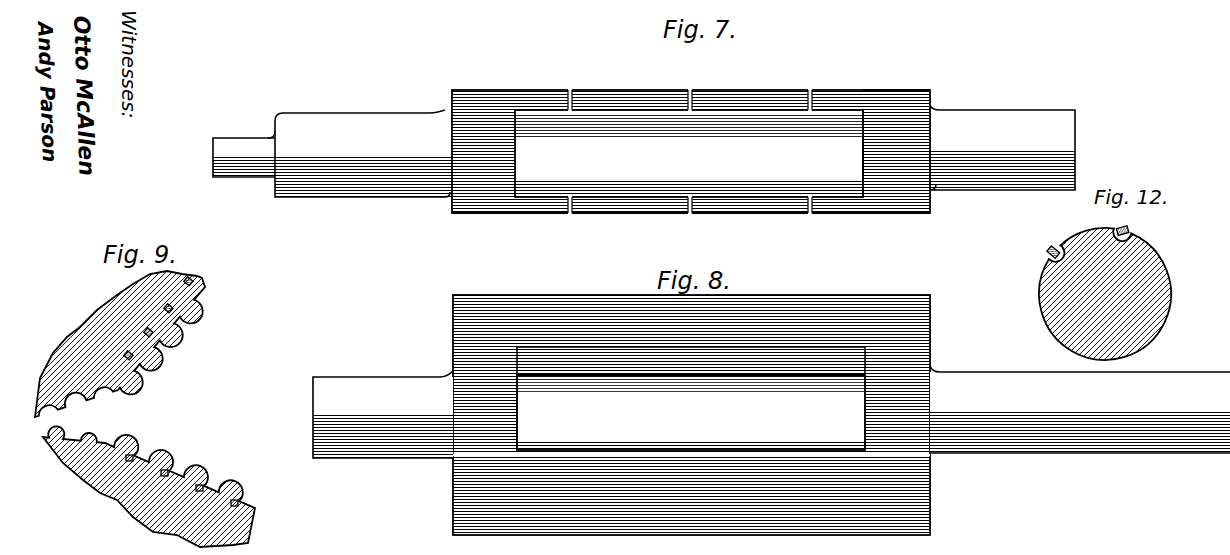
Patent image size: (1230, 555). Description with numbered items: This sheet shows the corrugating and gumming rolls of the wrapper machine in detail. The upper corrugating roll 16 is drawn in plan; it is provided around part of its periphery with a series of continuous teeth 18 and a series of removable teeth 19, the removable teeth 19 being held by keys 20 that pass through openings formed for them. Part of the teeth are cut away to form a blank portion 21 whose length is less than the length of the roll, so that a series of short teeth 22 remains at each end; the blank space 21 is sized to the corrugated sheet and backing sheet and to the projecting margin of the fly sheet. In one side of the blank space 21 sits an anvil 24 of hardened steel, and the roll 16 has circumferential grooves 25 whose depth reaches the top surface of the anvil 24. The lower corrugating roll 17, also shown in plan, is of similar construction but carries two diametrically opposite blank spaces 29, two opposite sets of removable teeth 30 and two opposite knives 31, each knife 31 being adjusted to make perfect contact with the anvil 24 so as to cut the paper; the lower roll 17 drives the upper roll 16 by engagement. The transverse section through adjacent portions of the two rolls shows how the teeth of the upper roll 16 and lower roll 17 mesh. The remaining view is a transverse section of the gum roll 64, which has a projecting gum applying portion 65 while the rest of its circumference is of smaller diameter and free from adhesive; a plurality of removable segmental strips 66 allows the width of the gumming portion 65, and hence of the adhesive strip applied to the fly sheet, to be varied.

In FIG. 7, the upper corrugating roll 16 is at (746, 90).
In FIG. 9, the upper corrugating roll 16 is at (90, 326).
In FIG. 8, the lower corrugating roll 17 is at (832, 300).
In FIG. 9, the lower corrugating roll 17 is at (230, 520).
In FIG. 7, the continuous teeth 18 is at (906, 91).
In FIG. 7, the removable teeth 19 is at (625, 200).
In FIG. 9, the removable teeth 19 is at (190, 331).
In FIG. 9, the keys 20 is at (197, 283).
In FIG. 7, the blank portion 21 is at (689, 153).
In FIG. 7, the short teeth 22 is at (477, 163).
In FIG. 7, the anvil 24 is at (848, 110).
In FIG. 7, the circumferential grooves 25 is at (570, 88).
In FIG. 8, the blank spaces 29 is at (691, 413).
In FIG. 8, the removable teeth 30 is at (592, 357).
In FIG. 9, the removable teeth 30 is at (196, 466).
In FIG. 8, the knives 31 is at (915, 447).
In FIG. 12, the gum roll 64 is at (1150, 285).
In FIG. 12, the projecting gum applying portion 65 is at (1066, 247).
In FIG. 12, the removable segmental strips 66 is at (1119, 233).